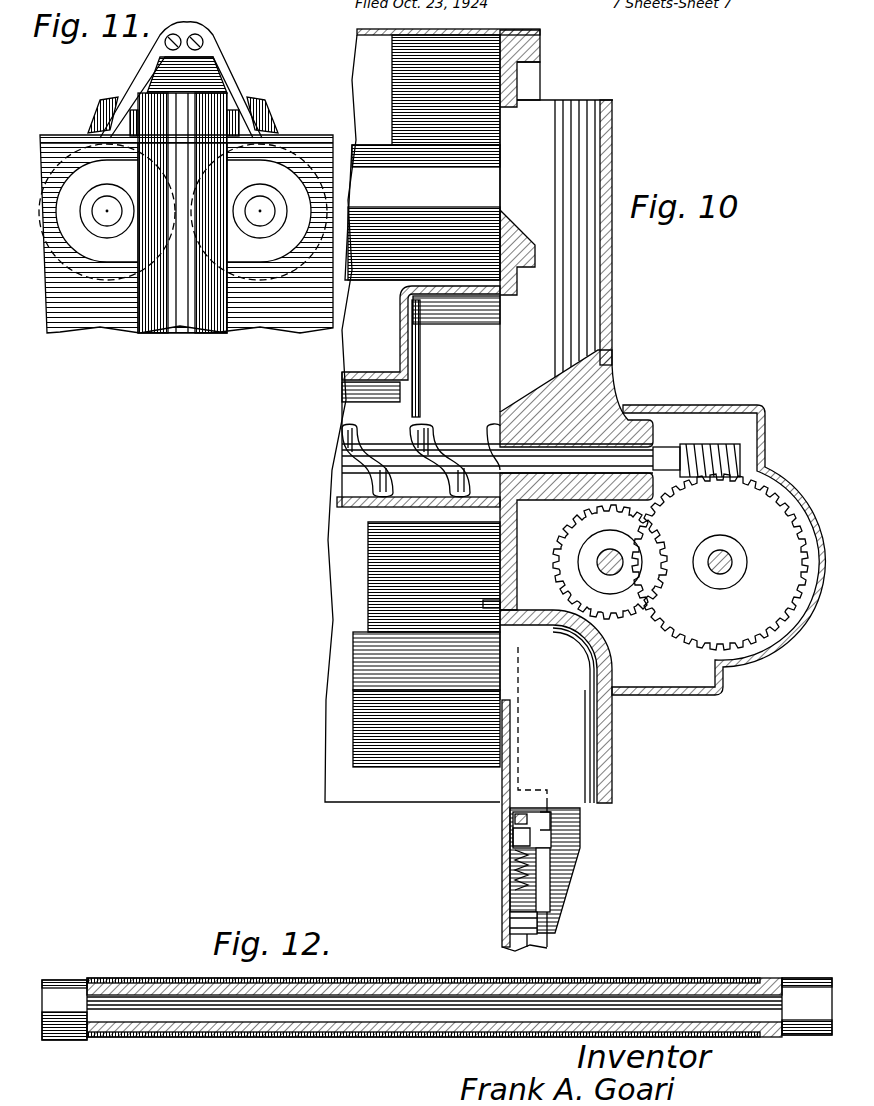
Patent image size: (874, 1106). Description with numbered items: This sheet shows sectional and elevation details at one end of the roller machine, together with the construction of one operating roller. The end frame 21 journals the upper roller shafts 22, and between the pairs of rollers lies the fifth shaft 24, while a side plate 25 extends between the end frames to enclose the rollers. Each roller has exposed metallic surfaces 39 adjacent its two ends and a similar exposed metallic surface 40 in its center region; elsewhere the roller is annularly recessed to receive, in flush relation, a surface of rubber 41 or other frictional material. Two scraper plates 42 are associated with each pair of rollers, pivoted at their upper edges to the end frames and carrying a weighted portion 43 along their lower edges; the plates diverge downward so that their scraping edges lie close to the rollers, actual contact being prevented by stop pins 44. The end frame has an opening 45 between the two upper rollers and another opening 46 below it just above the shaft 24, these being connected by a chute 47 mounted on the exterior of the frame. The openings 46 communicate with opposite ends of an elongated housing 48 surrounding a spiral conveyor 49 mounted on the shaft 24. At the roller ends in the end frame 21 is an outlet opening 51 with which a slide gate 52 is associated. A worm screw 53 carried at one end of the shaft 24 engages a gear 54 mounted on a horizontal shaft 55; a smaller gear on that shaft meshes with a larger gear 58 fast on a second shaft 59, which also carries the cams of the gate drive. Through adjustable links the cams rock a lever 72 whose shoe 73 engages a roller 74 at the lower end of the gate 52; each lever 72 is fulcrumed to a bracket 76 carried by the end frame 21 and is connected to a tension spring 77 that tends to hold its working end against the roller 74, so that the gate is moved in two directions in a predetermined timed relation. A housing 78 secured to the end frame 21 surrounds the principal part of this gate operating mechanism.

In FIG. 11, the end frame 21 is at (120, 320).
In FIG. 10, the end frame 21 is at (547, 72).
In FIG. 11, the upper roller shafts 22 is at (103, 220).
In FIG. 10, the fifth shaft 24 is at (352, 453).
In FIG. 10, the side plate 25 is at (363, 47).
In FIG. 11, the exposed metallic surfaces 39 is at (97, 283).
In FIG. 10, the exposed metallic surfaces 39 is at (313, 673).
In FIG. 12, the exposed metallic surfaces 39 is at (65, 980).
In FIG. 12, the exposed metallic surface 40 is at (434, 1040).
In FIG. 12, the surface of rubber 41 is at (245, 1040).
In FIG. 11, the scraper plates 42 is at (133, 85).
In FIG. 10, the scraper plates 42 is at (392, 82).
In FIG. 11, the weighted portion 43 is at (100, 110).
In FIG. 10, the stop pins 44 is at (487, 610).
In FIG. 10, the opening 45 is at (505, 185).
In FIG. 10, the opening 46 is at (505, 362).
In FIG. 11, the chute 47 is at (185, 320).
In FIG. 10, the chute 47 is at (612, 125).
In FIG. 10, the elongated housing 48 is at (366, 372).
In FIG. 10, the spiral conveyor 49 is at (345, 438).
In FIG. 10, the outlet opening 51 is at (510, 678).
In FIG. 10, the slide gate 52 is at (510, 762).
In FIG. 10, the worm screw 53 is at (735, 440).
In FIG. 10, the gear 54 is at (770, 628).
In FIG. 10, the horizontal shaft 55 is at (724, 572).
In FIG. 10, the larger gear 58 is at (640, 640).
In FIG. 10, the second shaft 59 is at (597, 562).
In FIG. 10, the lever 72 is at (510, 830).
In FIG. 10, the shoe 73 is at (510, 818).
In FIG. 10, the roller 74 is at (547, 945).
In FIG. 10, the bracket 76 is at (557, 870).
In FIG. 10, the tension spring 77 is at (508, 868).
In FIG. 10, the housing 78 is at (683, 405).